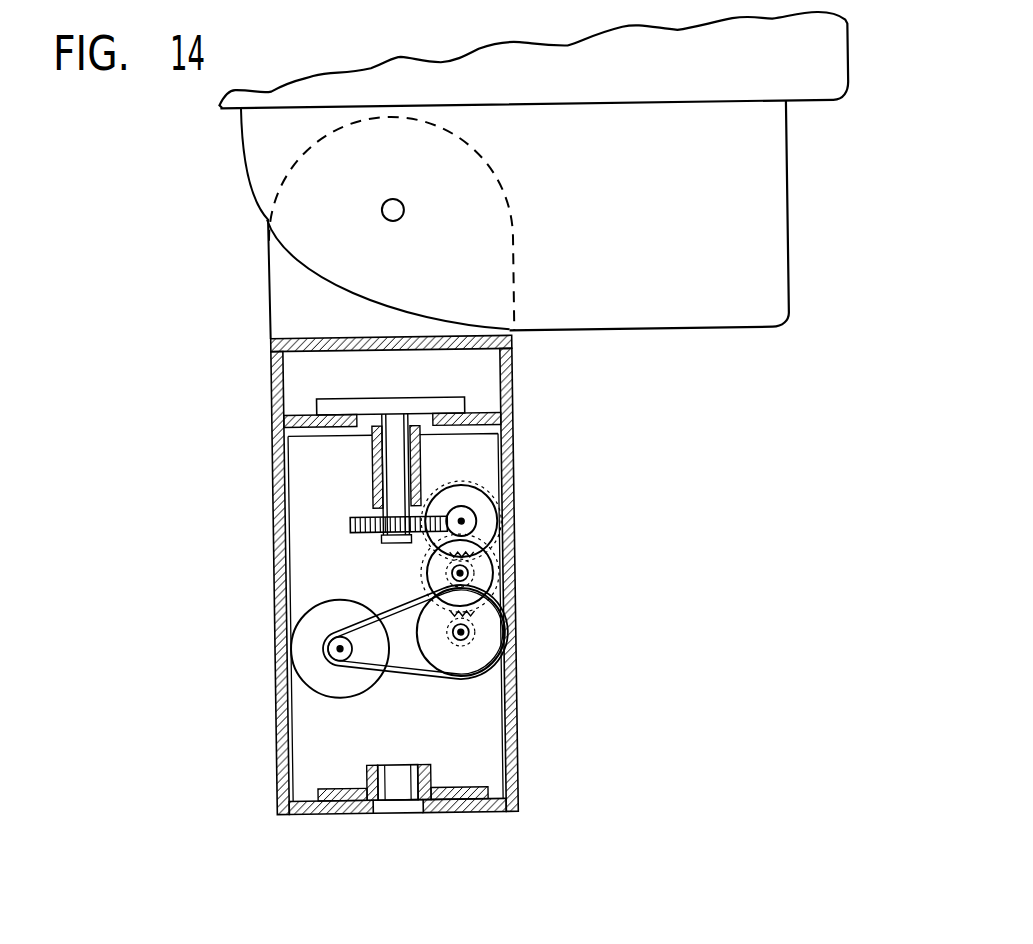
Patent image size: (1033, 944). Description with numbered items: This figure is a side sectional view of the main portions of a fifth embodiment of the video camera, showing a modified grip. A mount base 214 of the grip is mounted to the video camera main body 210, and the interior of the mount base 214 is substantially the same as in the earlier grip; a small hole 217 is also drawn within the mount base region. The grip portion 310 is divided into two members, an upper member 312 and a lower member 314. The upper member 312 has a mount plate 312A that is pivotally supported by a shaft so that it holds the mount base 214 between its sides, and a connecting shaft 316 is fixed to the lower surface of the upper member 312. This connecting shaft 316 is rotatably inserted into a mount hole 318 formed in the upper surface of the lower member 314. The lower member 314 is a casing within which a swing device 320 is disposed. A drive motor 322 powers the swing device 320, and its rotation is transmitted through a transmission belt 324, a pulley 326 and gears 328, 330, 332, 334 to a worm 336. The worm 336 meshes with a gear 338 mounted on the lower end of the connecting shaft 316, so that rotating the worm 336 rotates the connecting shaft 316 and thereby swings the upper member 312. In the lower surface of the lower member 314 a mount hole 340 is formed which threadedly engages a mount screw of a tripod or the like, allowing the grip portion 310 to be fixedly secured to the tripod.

The video camera main body 210 is at (694, 81).
The mount base 214 is at (683, 225).
The pivot hole 217 is at (387, 210).
The mount plate 312A is at (272, 260).
The upper member 312 is at (273, 358).
The connecting shaft 316 is at (456, 393).
The grip portion 310 is at (388, 574).
The mount hole 318 is at (376, 470).
The gear 338 is at (356, 522).
The worm 336 is at (489, 501).
The gear 334 is at (498, 529).
The lower member 314 is at (276, 535).
The gear 332 is at (497, 579).
The gear 330 is at (485, 579).
The drive motor 322 is at (358, 603).
The swing device 320 is at (312, 585).
The gear 328 is at (486, 628).
The transmission belt 324 is at (392, 672).
The pulley 326 is at (466, 661).
The mount hole 340 is at (432, 764).